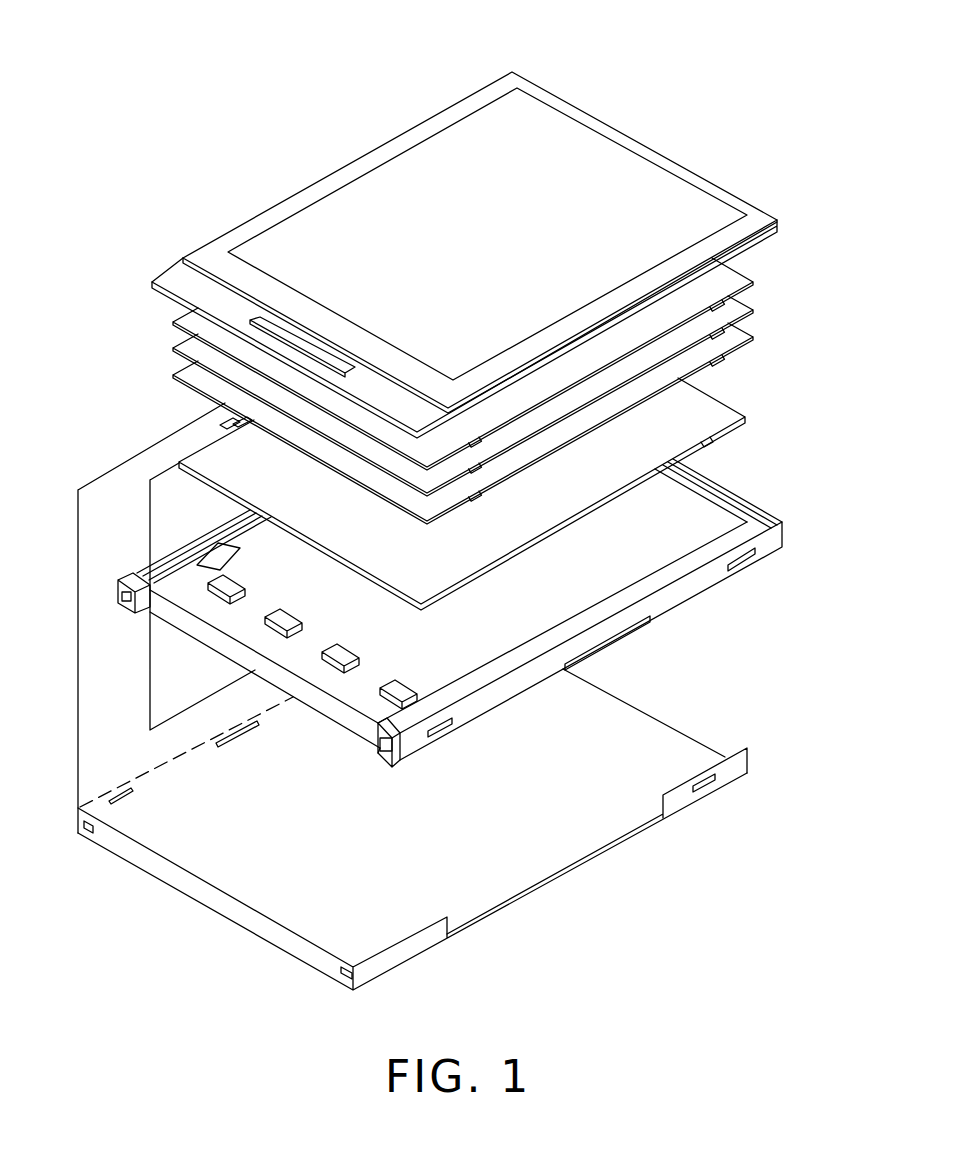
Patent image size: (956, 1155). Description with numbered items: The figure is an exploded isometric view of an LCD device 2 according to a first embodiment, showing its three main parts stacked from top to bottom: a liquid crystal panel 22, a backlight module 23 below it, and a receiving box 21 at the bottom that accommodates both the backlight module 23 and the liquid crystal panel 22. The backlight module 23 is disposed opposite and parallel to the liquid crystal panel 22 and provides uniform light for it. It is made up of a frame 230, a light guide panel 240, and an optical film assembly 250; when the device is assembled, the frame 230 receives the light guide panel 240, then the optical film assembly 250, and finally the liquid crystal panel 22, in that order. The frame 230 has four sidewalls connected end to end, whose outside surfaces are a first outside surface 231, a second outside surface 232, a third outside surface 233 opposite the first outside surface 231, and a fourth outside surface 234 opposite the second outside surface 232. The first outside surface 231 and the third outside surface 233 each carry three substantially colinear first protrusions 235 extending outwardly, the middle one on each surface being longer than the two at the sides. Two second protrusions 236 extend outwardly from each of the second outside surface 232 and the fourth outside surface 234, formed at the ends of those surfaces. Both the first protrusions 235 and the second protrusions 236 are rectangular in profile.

The LCD device 2 is at (508, 37).
The receiving box 21 is at (491, 872).
The liquid crystal panel 22 is at (693, 178).
The backlight module 23 is at (812, 293).
The frame 230 is at (712, 463).
The first outside surface 231 is at (707, 580).
The second outside surface 232 is at (393, 762).
The third outside surface 233 is at (183, 537).
The fourth outside surface 234 is at (733, 487).
The first protrusions 235 is at (640, 613).
The second protrusions 236 is at (378, 748).
The light guide panel 240 is at (712, 410).
The optical film assembly 250 is at (757, 273).